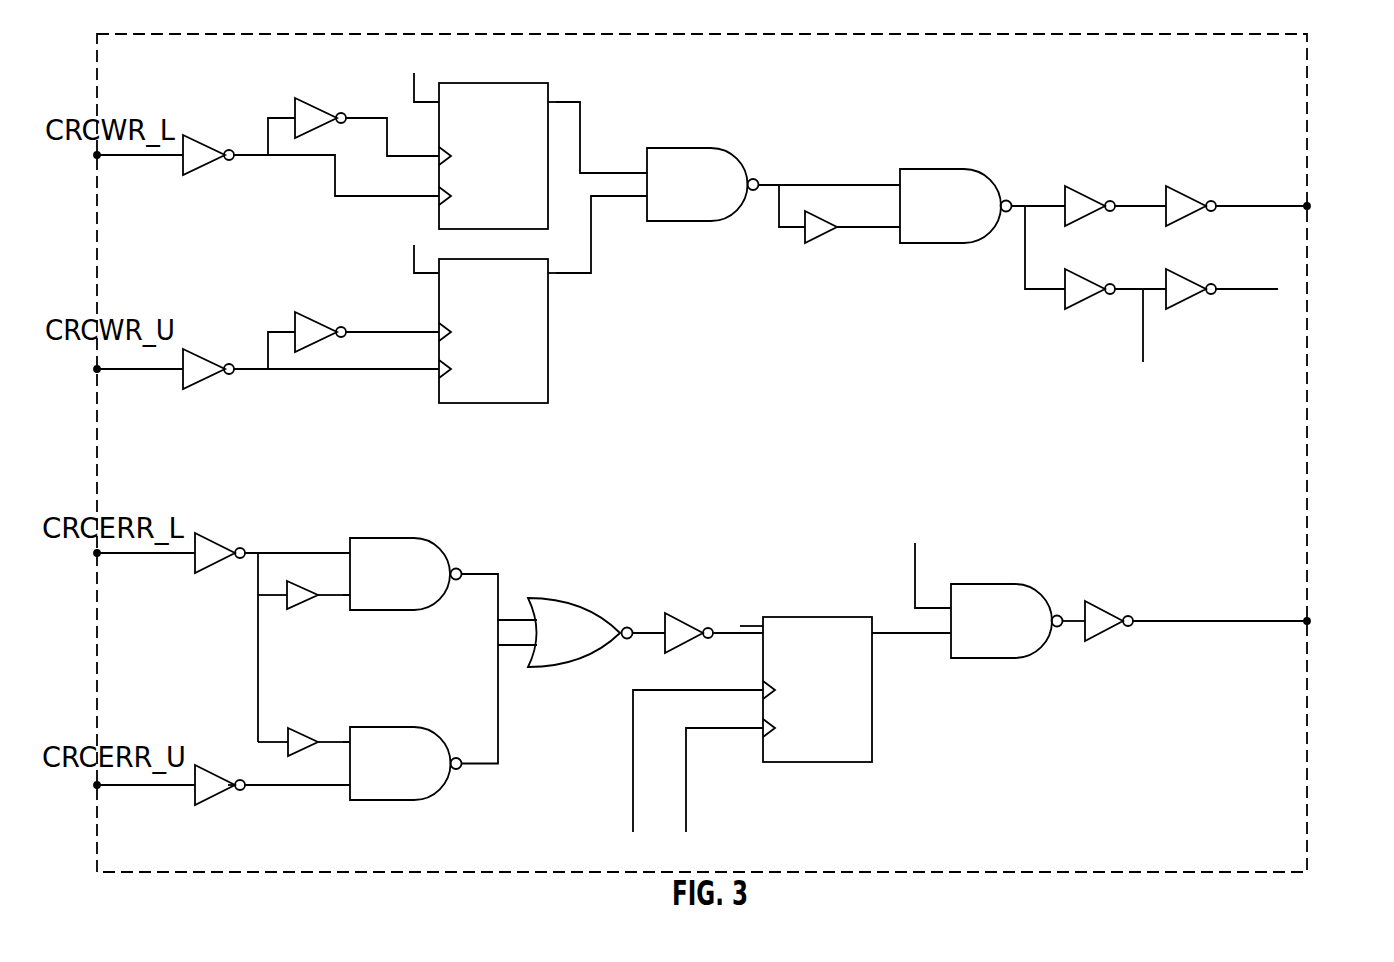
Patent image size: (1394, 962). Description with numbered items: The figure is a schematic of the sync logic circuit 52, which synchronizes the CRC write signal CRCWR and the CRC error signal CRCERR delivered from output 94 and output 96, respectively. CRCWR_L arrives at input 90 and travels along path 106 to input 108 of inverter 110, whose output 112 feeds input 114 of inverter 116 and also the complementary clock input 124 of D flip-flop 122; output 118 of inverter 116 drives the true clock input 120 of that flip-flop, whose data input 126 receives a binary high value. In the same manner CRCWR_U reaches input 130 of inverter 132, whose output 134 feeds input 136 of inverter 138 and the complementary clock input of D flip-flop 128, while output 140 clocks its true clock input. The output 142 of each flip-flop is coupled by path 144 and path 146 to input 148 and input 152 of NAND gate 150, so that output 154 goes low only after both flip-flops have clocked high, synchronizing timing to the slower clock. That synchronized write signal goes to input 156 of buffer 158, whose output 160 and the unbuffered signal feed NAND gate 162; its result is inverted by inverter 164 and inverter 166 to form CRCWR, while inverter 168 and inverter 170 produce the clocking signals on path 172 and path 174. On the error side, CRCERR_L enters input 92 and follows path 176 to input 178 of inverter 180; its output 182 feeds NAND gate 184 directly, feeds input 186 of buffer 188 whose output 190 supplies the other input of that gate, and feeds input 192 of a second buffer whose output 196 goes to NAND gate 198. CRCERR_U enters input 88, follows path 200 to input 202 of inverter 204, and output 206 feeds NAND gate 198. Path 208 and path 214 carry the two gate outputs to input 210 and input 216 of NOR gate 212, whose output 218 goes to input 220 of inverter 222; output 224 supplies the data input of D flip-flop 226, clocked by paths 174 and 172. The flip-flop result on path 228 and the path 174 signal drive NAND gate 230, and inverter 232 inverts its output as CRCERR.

The sync logic circuit 52 is at (1113, 48).
The input 88 is at (97, 370).
The input 90 is at (97, 156).
The input 92 is at (97, 554).
The output 94 is at (1307, 206).
The output 96 is at (1307, 621).
The path 106 is at (135, 158).
The input 108 is at (195, 160).
The inverter 110 is at (205, 140).
The output 112 is at (231, 162).
The input 114 is at (284, 118).
The inverter 116 is at (315, 108).
The output 118 is at (345, 114).
The input 120 is at (440, 152).
The D flip-flop 122 is at (492, 83).
The input 124 is at (440, 194).
The input 126 is at (437, 94).
The D flip-flop 128 is at (135, 373).
The input 130 is at (195, 373).
The inverter 132 is at (205, 355).
The output 134 is at (231, 376).
The input 136 is at (284, 332).
The inverter 138 is at (315, 320).
The output 140 is at (345, 328).
The output 142 is at (552, 98).
The path 144 is at (583, 125).
The path 146 is at (596, 262).
The input 148 is at (647, 168).
The NAND gate 150 is at (690, 148).
The input 152 is at (647, 208).
The output 154 is at (757, 179).
The input 156 is at (806, 242).
The buffer 158 is at (822, 232).
The output 160 is at (836, 226).
The NAND gate 162 is at (940, 169).
The inverter 164 is at (1085, 192).
The inverter 166 is at (1185, 192).
The inverter 168 is at (1085, 276).
The inverter 170 is at (1185, 276).
The path 172 is at (1143, 330).
The path 174 is at (1255, 292).
The path 176 is at (135, 558).
The input 178 is at (197, 558).
The inverter 180 is at (215, 540).
The output 182 is at (243, 548).
The NAND gate 184 is at (395, 538).
The input 186 is at (283, 598).
The buffer 188 is at (300, 580).
The output 190 is at (300, 612).
The input 192 is at (287, 748).
The output 196 is at (305, 728).
The NAND gate 198 is at (385, 801).
The path 200 is at (135, 790).
The input 202 is at (197, 790).
The inverter 204 is at (225, 792).
The output 206 is at (243, 792).
The path 208 is at (502, 582).
The input 210 is at (527, 623).
The NOR gate 212 is at (600, 598).
The path 214 is at (470, 768).
The input 216 is at (527, 646).
The output 218 is at (625, 642).
The input 220 is at (675, 620).
The inverter 222 is at (685, 618).
The output 224 is at (706, 645).
The D flip-flop 226 is at (795, 617).
The path 228 is at (915, 628).
The NAND gate 230 is at (990, 584).
The inverter 232 is at (1105, 605).